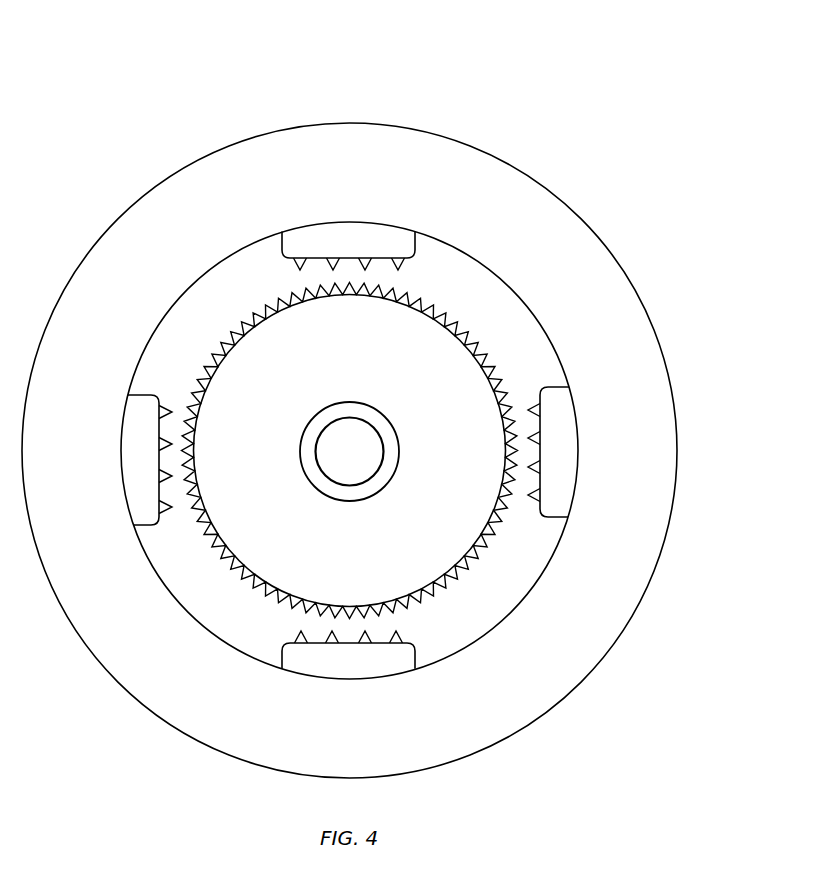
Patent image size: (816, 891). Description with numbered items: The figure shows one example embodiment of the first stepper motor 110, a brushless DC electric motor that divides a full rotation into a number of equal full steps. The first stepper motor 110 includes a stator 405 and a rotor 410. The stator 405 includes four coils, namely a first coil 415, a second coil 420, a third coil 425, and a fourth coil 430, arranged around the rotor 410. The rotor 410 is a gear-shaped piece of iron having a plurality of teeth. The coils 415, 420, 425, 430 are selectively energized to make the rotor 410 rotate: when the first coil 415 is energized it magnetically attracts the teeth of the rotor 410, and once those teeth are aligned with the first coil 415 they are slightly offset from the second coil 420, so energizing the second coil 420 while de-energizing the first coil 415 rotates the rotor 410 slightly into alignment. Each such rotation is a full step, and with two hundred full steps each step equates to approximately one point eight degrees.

The first stepper motor 110 is at (143, 76).
The stator 405 is at (123, 236).
The rotor 410 is at (283, 367).
The first coil 415 is at (330, 240).
The second coil 420 is at (563, 445).
The third coil 425 is at (347, 668).
The fourth coil 430 is at (140, 455).